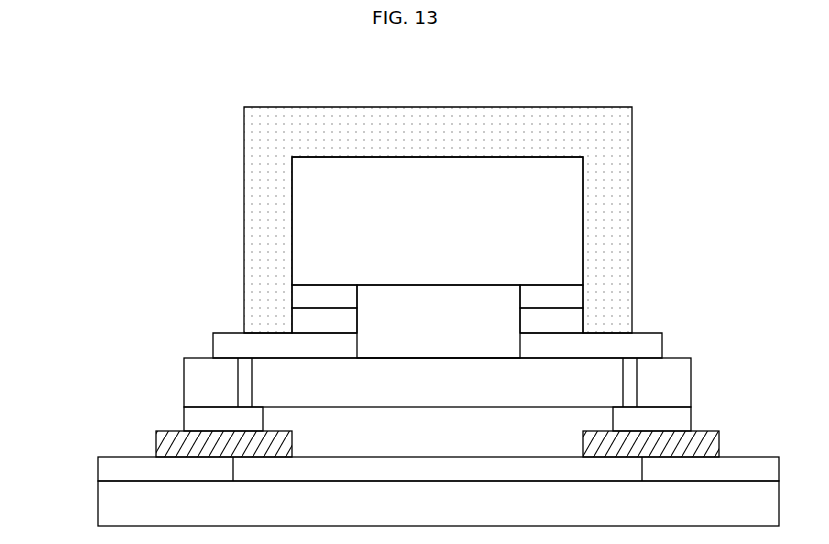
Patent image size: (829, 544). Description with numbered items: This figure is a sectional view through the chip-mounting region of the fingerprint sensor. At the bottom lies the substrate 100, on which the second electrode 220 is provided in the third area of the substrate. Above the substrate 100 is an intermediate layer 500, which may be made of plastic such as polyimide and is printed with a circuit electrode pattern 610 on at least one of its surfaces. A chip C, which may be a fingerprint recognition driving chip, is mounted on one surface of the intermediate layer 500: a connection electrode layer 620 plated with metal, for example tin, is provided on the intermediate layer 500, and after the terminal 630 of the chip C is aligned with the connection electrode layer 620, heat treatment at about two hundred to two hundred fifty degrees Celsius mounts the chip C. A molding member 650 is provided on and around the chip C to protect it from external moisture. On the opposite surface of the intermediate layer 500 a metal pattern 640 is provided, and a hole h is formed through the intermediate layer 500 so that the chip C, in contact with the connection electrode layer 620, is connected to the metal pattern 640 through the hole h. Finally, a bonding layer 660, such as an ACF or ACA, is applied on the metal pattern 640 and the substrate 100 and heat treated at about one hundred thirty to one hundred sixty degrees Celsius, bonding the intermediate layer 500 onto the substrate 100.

The substrate 100 is at (106, 500).
The second electrode 220 is at (106, 468).
The intermediate layer 500 is at (192, 390).
The circuit electrode pattern 610 is at (220, 344).
The connection electrode layer 620 is at (308, 326).
The terminal 630 is at (308, 296).
The metal pattern 640 is at (197, 420).
The molding member 650 is at (455, 128).
The bonding layer 660 is at (164, 446).
The hole h is at (245, 378).
The chip C is at (367, 172).